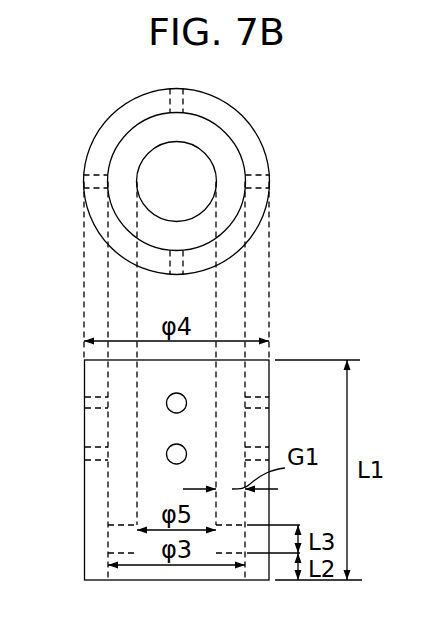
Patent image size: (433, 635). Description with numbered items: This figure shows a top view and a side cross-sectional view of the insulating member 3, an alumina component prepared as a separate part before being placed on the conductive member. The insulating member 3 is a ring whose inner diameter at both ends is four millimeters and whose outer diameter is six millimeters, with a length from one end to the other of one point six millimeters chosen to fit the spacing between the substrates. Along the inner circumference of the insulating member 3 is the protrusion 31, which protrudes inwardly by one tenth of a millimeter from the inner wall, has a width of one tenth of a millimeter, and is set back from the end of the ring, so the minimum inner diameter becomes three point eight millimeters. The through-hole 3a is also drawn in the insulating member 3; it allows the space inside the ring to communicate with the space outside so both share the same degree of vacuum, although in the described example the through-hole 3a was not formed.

The insulating member 3 is at (236, 128).
The through-hole 3a is at (262, 183).
The protrusion 31 is at (110, 537).